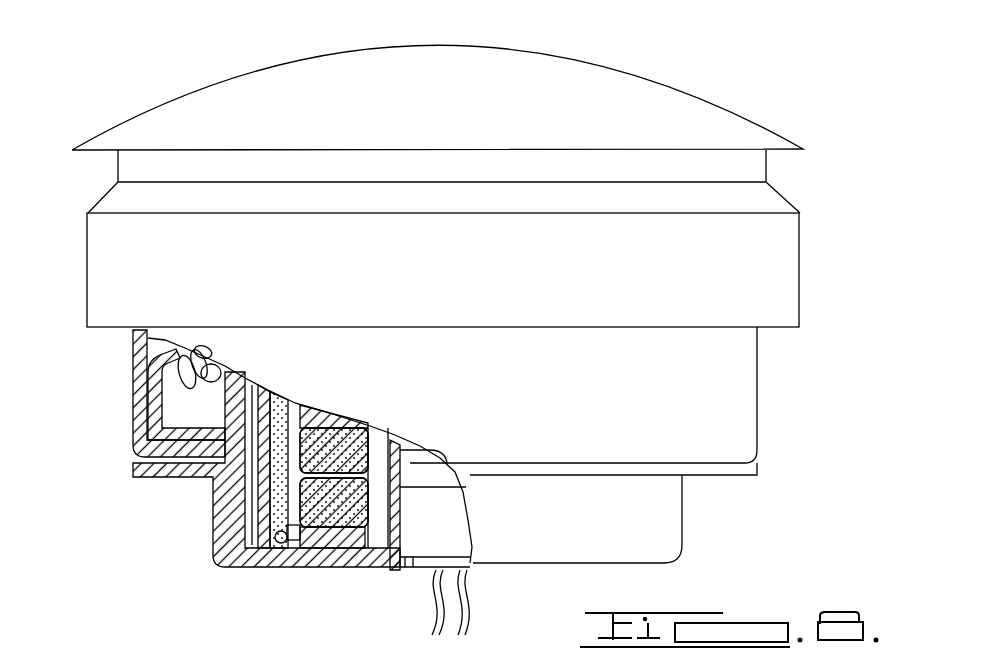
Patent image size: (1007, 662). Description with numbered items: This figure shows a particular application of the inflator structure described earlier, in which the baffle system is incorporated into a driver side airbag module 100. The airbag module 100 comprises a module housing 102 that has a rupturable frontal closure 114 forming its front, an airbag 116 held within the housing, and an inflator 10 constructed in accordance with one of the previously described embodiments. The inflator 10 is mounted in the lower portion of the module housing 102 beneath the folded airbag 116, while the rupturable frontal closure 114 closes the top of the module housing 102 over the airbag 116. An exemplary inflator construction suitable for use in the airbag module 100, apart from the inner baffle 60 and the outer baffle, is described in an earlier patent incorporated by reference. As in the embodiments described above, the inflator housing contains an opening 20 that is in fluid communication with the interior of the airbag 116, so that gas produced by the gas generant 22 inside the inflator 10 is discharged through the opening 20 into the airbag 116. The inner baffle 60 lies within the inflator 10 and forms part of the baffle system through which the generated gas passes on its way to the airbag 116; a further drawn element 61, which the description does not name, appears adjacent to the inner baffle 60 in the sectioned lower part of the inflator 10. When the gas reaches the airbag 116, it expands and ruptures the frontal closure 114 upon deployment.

The driver side airbag module 100 is at (746, 92).
The rupturable frontal closure 114 is at (656, 70).
The module housing 102 is at (779, 257).
The airbag 116 is at (141, 409).
The opening 20 is at (233, 418).
The gas generant 22 is at (337, 430).
The contact plate 61 is at (257, 530).
The inner baffle 60 is at (267, 520).
The inflator 10 is at (300, 525).